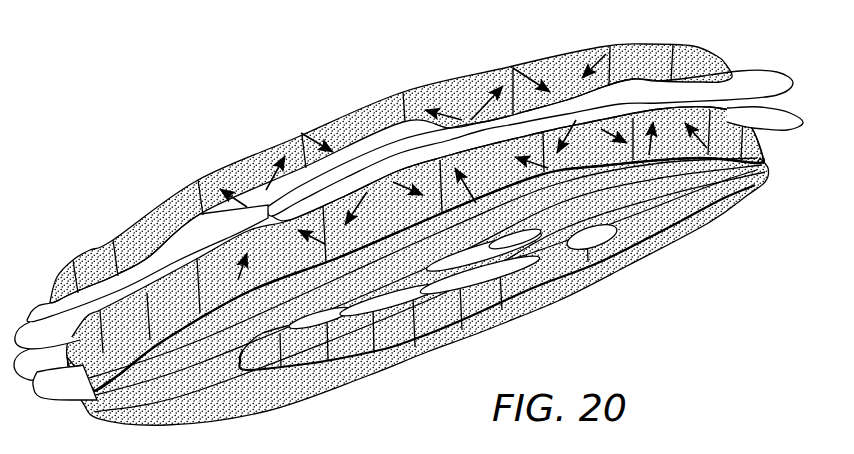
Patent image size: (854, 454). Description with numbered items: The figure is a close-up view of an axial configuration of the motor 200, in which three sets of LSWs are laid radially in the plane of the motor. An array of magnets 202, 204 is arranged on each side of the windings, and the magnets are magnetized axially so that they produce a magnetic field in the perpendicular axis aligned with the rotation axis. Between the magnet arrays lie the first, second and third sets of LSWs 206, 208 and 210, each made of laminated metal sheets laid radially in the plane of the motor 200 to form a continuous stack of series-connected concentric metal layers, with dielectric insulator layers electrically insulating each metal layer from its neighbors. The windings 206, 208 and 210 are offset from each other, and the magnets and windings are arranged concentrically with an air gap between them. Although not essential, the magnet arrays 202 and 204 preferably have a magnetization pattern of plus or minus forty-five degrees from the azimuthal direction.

The motor 200 is at (408, 223).
The array of magnets 202 is at (180, 186).
The array of magnets 204 is at (601, 293).
The first set of LSWs 206 is at (345, 143).
The second set of LSWs 208 is at (467, 118).
The third set of LSWs 210 is at (393, 157).